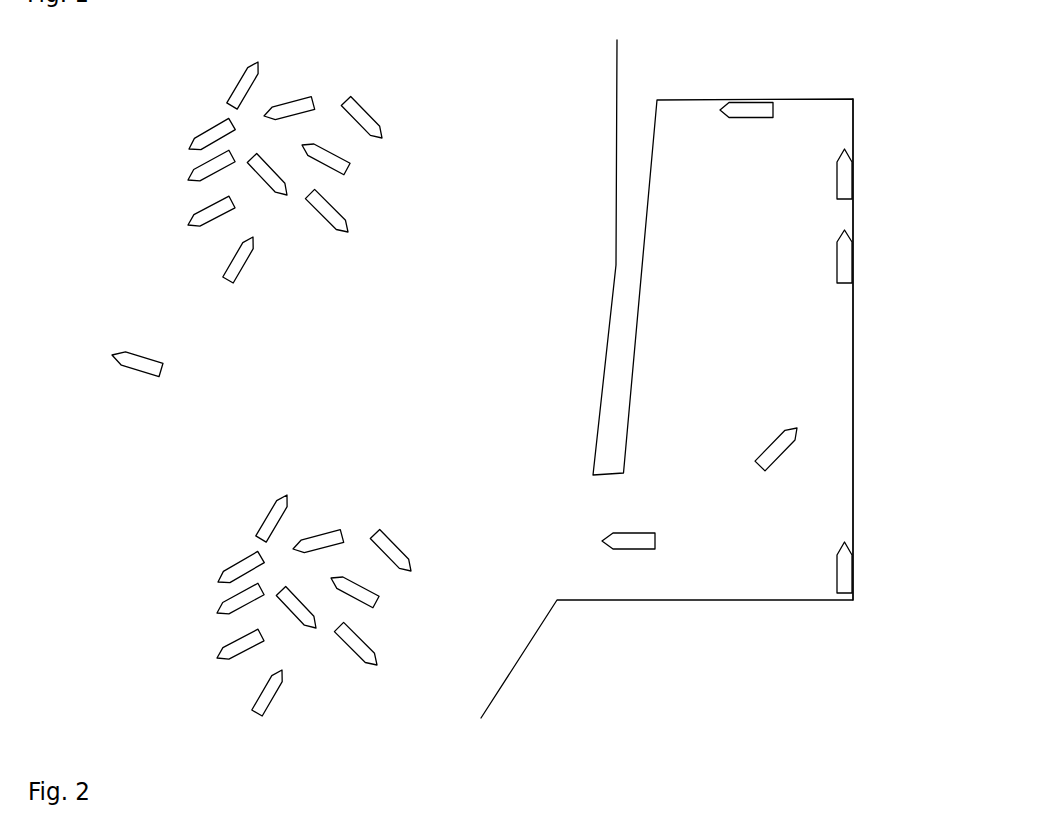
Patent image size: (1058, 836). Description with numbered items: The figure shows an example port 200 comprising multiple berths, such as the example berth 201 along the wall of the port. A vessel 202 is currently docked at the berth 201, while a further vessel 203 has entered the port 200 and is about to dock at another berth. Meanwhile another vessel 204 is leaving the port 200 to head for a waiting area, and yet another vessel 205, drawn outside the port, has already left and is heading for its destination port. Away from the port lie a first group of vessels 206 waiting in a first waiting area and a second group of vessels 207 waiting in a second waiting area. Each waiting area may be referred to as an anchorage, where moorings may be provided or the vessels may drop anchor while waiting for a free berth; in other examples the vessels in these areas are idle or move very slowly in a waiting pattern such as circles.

The port 200 is at (770, 62).
The berth 201 is at (868, 181).
The vessel 202 is at (837, 182).
The further vessel 203 is at (777, 445).
The vessel 204 is at (627, 538).
The vessel 205 is at (147, 363).
The first group of vessels 206 is at (191, 107).
The second group of vessels 207 is at (199, 590).